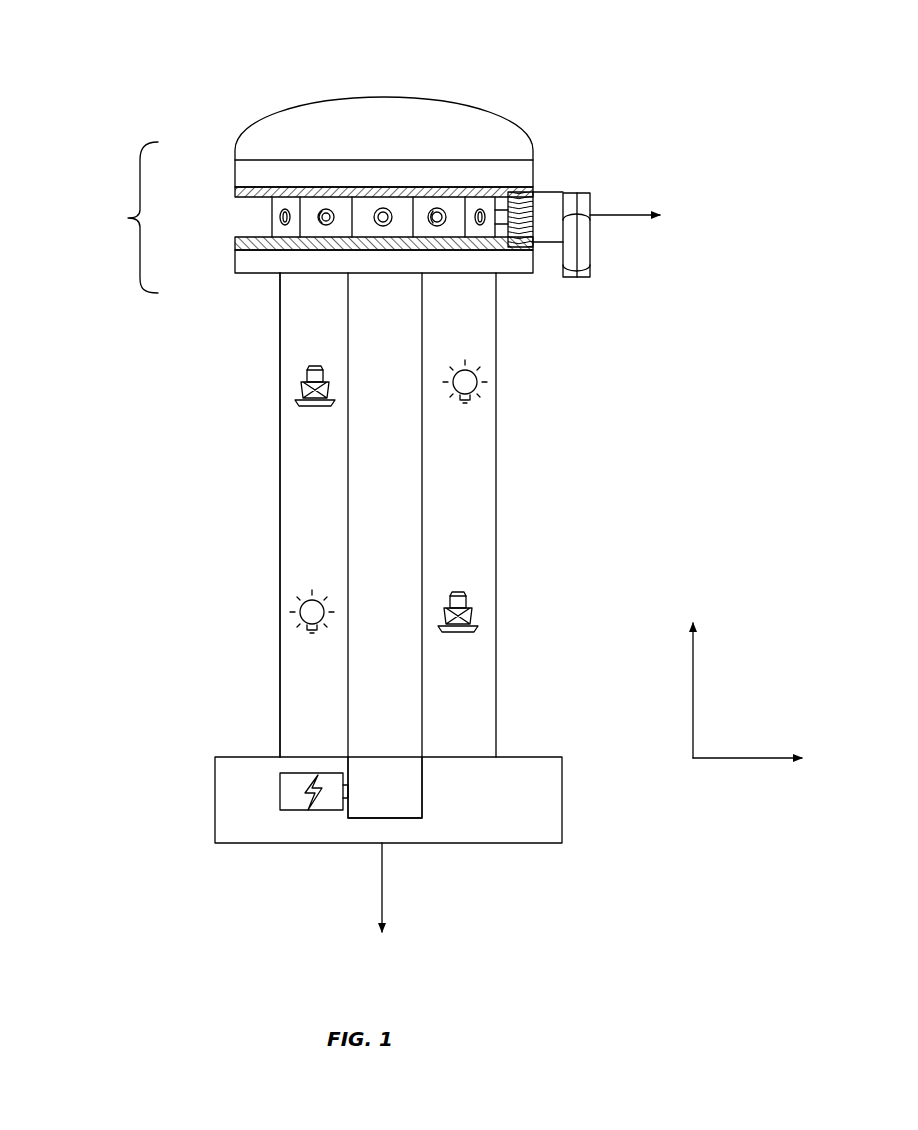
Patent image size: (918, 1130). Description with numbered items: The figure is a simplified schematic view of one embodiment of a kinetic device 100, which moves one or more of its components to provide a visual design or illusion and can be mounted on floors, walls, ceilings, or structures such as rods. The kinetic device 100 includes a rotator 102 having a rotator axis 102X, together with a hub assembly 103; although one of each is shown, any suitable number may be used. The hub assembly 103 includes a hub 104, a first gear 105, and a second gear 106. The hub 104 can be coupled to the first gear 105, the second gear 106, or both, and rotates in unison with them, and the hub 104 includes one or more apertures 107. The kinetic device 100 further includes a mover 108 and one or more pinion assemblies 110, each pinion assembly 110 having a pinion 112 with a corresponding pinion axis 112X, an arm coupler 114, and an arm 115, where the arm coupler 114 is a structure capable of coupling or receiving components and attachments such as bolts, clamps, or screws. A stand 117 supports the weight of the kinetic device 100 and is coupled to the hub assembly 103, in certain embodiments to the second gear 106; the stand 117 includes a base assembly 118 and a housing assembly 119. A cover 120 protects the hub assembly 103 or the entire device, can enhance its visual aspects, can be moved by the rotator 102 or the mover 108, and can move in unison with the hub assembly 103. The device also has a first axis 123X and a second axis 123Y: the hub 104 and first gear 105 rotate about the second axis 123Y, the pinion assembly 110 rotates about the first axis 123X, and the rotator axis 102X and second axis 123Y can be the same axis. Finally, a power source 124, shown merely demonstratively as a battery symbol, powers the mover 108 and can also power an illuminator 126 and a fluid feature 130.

The kinetic device 100 is at (180, 68).
The rotator 102 is at (422, 460).
The rotator axis 102X is at (382, 893).
The hub assembly 103 is at (123, 217).
The hub 104 is at (272, 211).
The first gear 105 is at (245, 173).
The second gear 106 is at (245, 258).
The aperture 107 is at (437, 210).
The mover 108 is at (408, 786).
The pinion assembly 110 is at (718, 239).
The pinion 112 is at (538, 245).
The pinion axis 112X is at (624, 215).
The arm coupler 114 is at (590, 235).
The arm 115 is at (588, 272).
The stand 117 is at (135, 558).
The base assembly 118 is at (215, 783).
The housing assembly 119 is at (280, 490).
The cover 120 is at (360, 97).
The first axis 123X is at (742, 760).
The second axis 123Y is at (693, 677).
The power source 124 is at (283, 784).
The illuminator 126 is at (298, 615).
The fluid feature 130 is at (478, 638).